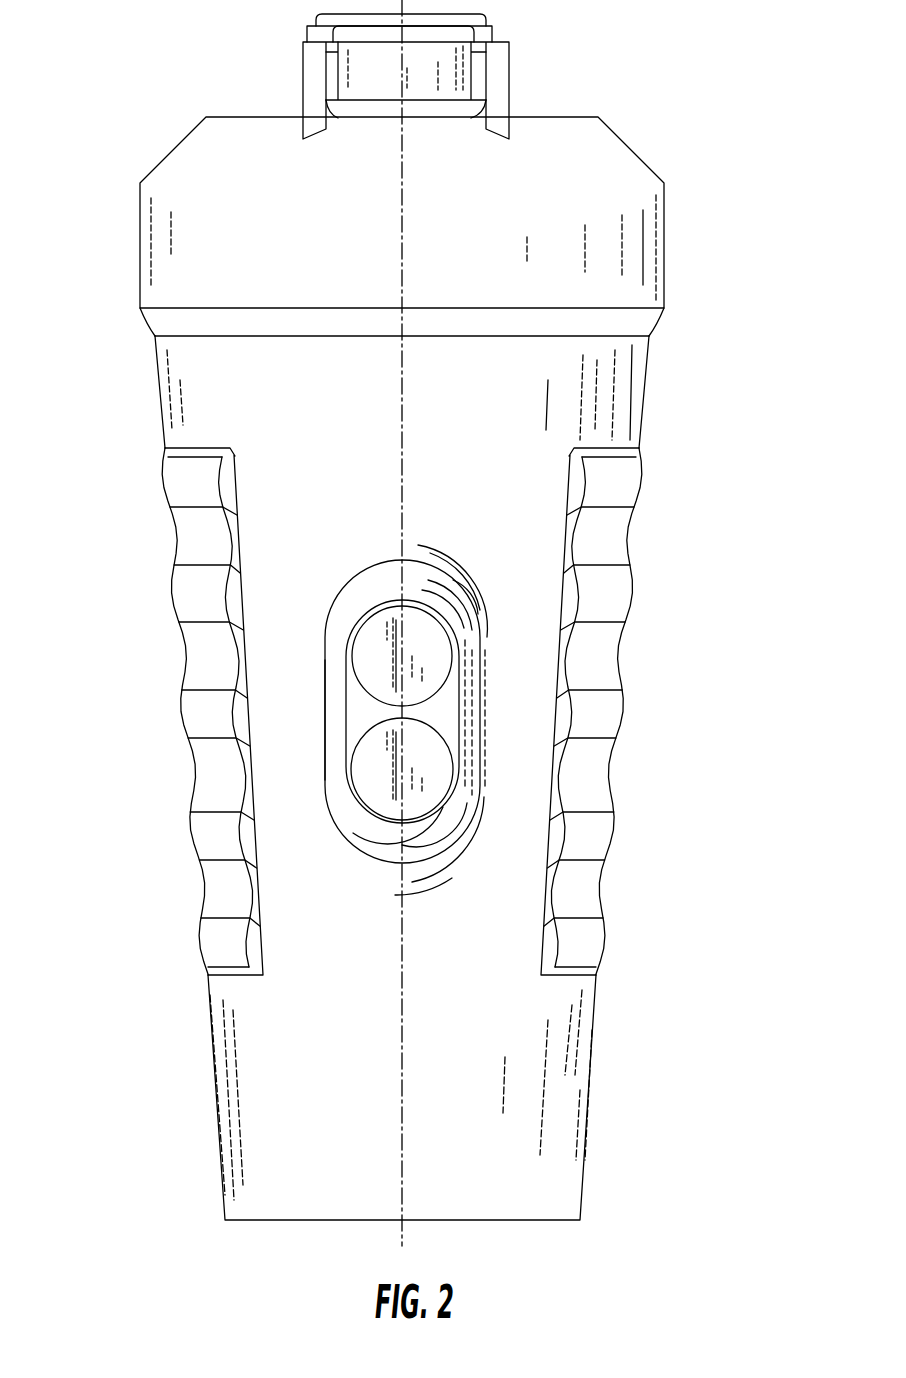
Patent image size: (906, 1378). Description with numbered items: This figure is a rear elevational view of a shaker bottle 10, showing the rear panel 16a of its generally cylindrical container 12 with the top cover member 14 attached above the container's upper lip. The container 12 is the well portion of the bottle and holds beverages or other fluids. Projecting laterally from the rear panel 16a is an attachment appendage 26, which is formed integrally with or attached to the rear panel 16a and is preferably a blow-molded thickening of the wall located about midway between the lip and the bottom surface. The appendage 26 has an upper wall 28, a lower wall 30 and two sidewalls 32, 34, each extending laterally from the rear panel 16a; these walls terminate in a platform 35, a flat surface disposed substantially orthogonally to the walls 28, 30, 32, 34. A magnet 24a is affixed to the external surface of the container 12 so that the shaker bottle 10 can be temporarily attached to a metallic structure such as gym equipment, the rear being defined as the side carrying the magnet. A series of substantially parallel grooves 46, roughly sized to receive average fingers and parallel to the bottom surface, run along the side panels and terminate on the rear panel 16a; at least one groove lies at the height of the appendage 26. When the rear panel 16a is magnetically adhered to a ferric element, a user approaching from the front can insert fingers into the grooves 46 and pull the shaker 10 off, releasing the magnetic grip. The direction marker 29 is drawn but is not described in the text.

The shaker bottle 10 is at (414, 628).
The container 12 is at (414, 668).
The top cover member 14 is at (623, 55).
The rear panel 16a is at (456, 1131).
The magnet 24a is at (383, 657).
The attachment appendage 26 is at (384, 707).
The upper wall 28 is at (387, 588).
The lateral axis 29 is at (402, 1246).
The lower wall 30 is at (407, 845).
The sidewall 32 is at (467, 768).
The sidewall 34 is at (335, 763).
The platform 35 is at (438, 712).
The grooves 46 is at (181, 675).